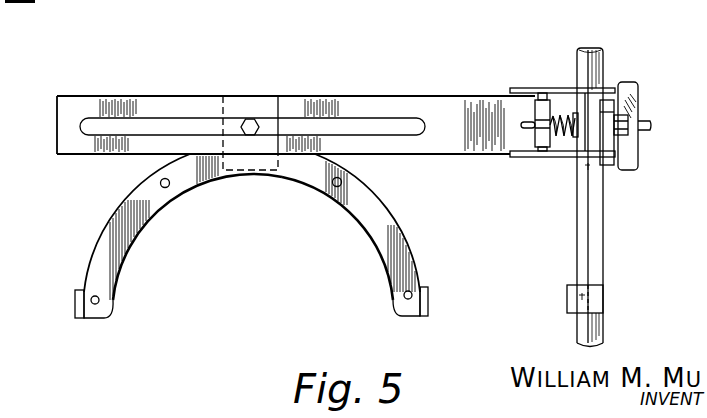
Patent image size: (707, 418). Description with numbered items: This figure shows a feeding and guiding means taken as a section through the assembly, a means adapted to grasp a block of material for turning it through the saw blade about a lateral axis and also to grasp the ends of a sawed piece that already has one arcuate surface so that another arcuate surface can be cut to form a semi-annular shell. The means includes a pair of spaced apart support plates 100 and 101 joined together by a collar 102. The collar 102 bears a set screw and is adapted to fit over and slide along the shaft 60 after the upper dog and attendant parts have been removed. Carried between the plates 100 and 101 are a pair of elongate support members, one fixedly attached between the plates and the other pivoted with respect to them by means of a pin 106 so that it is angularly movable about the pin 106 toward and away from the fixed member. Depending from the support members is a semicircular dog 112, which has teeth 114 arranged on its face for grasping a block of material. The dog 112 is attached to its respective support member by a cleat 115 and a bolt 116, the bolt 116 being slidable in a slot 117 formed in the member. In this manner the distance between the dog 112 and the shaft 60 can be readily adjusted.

The shaft 60 is at (604, 242).
The support plate 100 is at (530, 88).
The support plate 101 is at (505, 157).
The collar 102 is at (579, 93).
The pin 106 is at (547, 97).
The semicircular dog 112 is at (399, 223).
The teeth 114 is at (404, 295).
The cleat 115 is at (270, 108).
The bolt 116 is at (249, 118).
The slot 117 is at (343, 128).